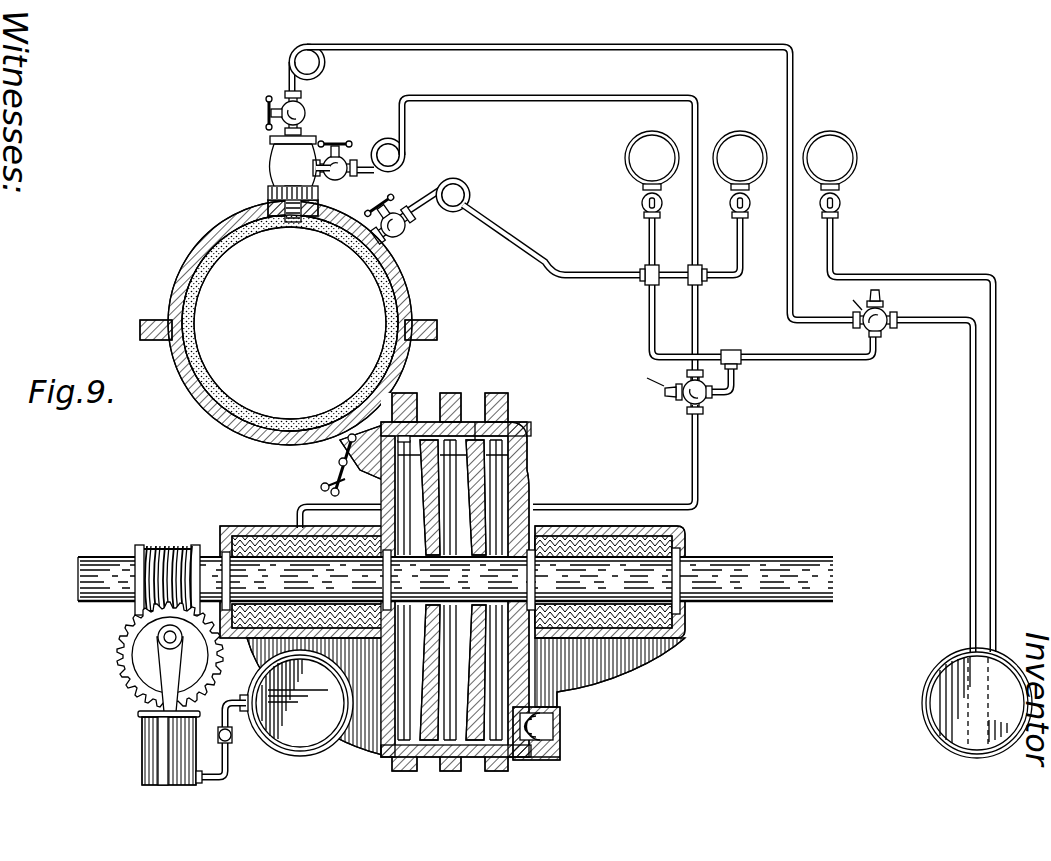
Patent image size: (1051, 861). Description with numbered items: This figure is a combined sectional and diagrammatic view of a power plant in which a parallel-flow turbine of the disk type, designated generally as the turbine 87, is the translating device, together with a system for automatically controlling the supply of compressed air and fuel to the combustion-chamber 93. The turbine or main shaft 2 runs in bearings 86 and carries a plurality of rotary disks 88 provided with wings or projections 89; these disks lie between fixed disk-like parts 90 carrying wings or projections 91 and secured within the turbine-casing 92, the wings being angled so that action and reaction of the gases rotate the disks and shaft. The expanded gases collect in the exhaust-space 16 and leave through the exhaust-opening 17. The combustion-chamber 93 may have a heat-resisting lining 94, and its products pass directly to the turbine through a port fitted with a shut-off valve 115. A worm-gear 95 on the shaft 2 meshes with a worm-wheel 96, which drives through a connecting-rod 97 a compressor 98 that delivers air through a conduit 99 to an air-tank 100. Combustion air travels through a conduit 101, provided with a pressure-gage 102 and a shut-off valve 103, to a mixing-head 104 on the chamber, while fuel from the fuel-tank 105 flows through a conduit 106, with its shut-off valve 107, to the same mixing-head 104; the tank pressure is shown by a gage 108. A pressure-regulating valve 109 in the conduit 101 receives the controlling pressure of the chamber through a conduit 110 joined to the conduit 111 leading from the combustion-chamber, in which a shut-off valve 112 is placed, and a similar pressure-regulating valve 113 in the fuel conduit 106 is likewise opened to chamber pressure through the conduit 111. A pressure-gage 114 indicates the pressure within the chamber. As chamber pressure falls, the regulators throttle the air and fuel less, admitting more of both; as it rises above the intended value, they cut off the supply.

The turbine or main shaft 2 is at (796, 604).
The exhaust-space 16 is at (520, 738).
The exhaust-opening 17 is at (556, 736).
The bearings 86 is at (240, 526).
The turbine 87 is at (523, 440).
The rotary disks 88 is at (498, 492).
The wings or projections 89 is at (412, 414).
The fixed disk-like parts 90 is at (492, 485).
The wings or projections 91 is at (476, 421).
The turbine-casing 92 is at (386, 752).
The combustion-chamber 93 is at (234, 410).
The heat-resisting lining 94 is at (245, 412).
The worm-gear 95 is at (166, 546).
The worm-wheel 96 is at (132, 634).
The connecting-rod 97 is at (168, 672).
The compressor 98 is at (146, 730).
The conduit 99 is at (226, 698).
The air-tank 100 is at (296, 703).
The conduit 101 is at (699, 497).
The pressure-gage 102 is at (738, 142).
The shut-off valve 103 is at (340, 150).
The mixing-head 104 is at (278, 160).
The fuel-tank 105 is at (977, 703).
The conduit 106 is at (944, 322).
The shut-off valve 107 is at (282, 110).
The gage 108 is at (842, 162).
The pressure-regulating valve 109 is at (668, 392).
The conduit 110 is at (735, 388).
The conduit 111 is at (620, 278).
The shut-off valve 112 is at (392, 212).
The pressure-regulating valve 113 is at (888, 312).
The pressure-gage 114 is at (640, 162).
The shut-off valve 115 is at (322, 485).